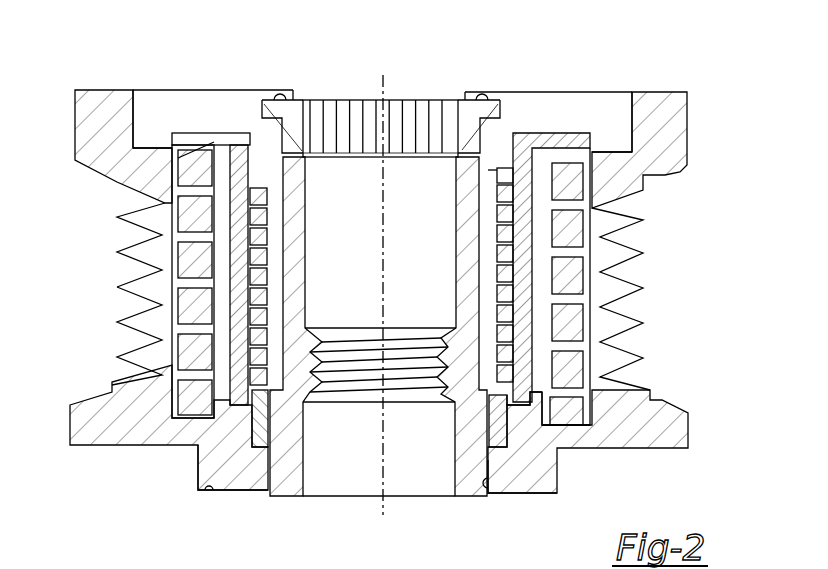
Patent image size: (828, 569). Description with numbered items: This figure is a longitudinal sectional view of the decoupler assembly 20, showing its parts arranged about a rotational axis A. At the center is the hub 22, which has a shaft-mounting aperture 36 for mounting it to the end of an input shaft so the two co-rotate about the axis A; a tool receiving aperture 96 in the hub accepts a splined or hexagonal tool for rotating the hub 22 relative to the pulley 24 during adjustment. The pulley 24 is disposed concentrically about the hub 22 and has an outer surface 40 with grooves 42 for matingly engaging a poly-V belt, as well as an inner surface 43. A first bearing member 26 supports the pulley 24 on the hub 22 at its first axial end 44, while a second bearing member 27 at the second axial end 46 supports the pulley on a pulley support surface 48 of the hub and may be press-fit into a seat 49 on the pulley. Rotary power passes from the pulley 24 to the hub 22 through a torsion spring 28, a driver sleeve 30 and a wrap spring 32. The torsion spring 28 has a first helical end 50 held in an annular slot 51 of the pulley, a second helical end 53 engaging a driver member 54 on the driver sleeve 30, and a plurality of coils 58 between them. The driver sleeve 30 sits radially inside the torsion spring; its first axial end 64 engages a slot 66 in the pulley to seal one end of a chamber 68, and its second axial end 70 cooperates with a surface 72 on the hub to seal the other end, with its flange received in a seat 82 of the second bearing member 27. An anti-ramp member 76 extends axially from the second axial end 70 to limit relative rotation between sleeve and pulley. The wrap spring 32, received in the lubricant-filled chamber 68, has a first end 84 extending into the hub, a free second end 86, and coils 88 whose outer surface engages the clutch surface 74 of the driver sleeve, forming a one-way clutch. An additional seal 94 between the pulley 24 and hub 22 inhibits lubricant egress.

The decoupler assembly 20 is at (631, 46).
The hub 22 is at (493, 483).
The pulley 24 is at (677, 440).
The first bearing member 26 is at (270, 433).
The second bearing member 27 is at (185, 90).
The torsion spring 28 is at (187, 393).
The driver sleeve 30 is at (240, 213).
The wrap spring 32 is at (160, 372).
The shaft-mounting aperture 36 is at (453, 487).
The outer surface 40 is at (678, 176).
The grooves 42 is at (612, 272).
The inner surface 43 is at (596, 278).
The first axial end 44 is at (210, 483).
The second axial end 46 is at (292, 120).
The pulley support surface 48 is at (262, 118).
The seat 49 is at (133, 115).
The first helical end 50 is at (577, 408).
The annular slot 51 is at (567, 412).
The second helical end 53 is at (185, 165).
The driver member 54 is at (205, 150).
The coils 58 is at (580, 263).
The first axial end 64 is at (528, 400).
The slot 66 is at (520, 403).
The chamber 68 is at (485, 270).
The second axial end 70 is at (533, 143).
The surface 72 is at (513, 166).
The clutch surface 74 is at (248, 220).
The anti-ramp member 76 is at (547, 148).
The seat 82 is at (270, 160).
The first end 84 is at (490, 173).
The second end 86 is at (250, 405).
The coils 88 is at (253, 343).
The seal 94 is at (270, 488).
The tool receiving aperture 96 is at (450, 120).
The rotational axis A is at (390, 87).